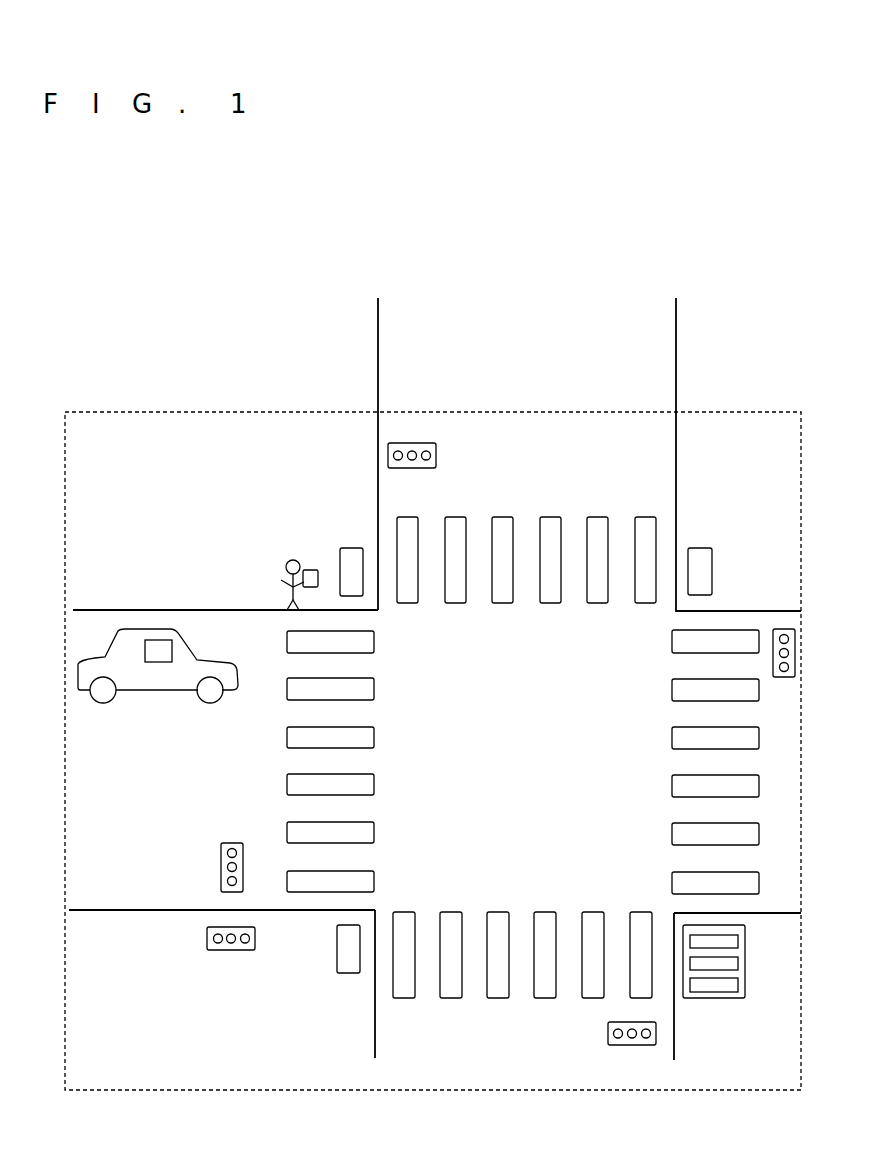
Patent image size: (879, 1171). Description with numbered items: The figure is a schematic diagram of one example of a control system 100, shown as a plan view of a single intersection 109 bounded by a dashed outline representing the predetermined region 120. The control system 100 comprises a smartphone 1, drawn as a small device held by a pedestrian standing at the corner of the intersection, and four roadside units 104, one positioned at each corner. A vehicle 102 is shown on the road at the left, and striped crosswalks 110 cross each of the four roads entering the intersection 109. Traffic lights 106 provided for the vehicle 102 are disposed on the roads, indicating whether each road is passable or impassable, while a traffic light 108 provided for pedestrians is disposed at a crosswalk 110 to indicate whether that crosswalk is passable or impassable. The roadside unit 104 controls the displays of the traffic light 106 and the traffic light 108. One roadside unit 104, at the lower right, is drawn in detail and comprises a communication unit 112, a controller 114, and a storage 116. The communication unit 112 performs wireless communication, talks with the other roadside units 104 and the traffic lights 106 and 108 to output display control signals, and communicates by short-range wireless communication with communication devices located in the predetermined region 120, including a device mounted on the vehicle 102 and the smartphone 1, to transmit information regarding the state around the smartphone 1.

The smartphone 1 is at (312, 570).
The control system 100 is at (249, 376).
The vehicle 102 is at (160, 694).
The roadside unit 104 is at (349, 548).
The traffic light 106 is at (784, 629).
The traffic light 108 is at (232, 950).
The intersection 109 is at (580, 474).
The crosswalk 110 is at (375, 687).
The communication unit 112 is at (738, 941).
The controller 114 is at (738, 963).
The storage 116 is at (738, 985).
The predetermined region 120 is at (333, 412).